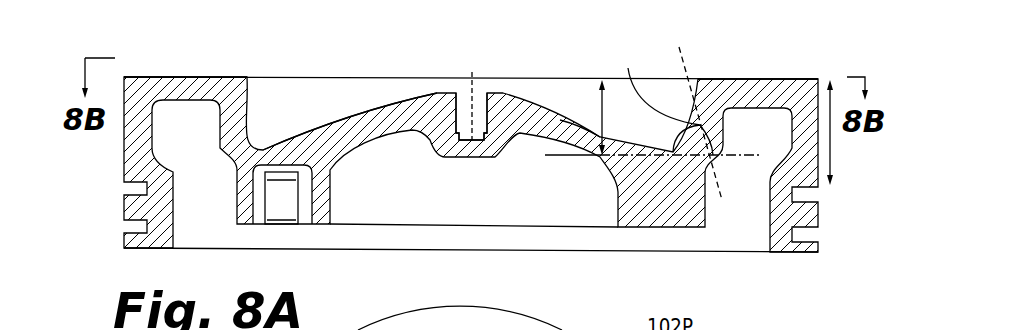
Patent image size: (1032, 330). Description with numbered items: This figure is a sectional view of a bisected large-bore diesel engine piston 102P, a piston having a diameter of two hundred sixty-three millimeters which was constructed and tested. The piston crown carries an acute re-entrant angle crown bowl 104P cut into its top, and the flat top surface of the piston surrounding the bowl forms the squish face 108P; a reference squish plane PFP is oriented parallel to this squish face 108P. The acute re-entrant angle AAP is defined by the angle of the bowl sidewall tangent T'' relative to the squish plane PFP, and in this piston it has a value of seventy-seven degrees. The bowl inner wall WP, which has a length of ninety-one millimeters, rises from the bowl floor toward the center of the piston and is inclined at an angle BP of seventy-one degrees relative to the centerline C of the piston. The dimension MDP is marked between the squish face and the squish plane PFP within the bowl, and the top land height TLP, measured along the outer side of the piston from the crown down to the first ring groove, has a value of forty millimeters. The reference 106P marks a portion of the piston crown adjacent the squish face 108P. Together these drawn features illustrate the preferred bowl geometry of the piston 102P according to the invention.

The large-bore diesel engine piston 102P is at (818, 75).
The acute re-entrant angle crown bowl 104P is at (310, 96).
The top land / rim 106P is at (216, 66).
The squish face 108P is at (770, 78).
The centerline C is at (472, 72).
The bowl inner wall WP is at (577, 128).
The acute re-entrant angle AAP is at (659, 99).
The maximum depth of piston bowl MDP is at (636, 112).
The bowl inner wall angle BP is at (496, 118).
The squish plane PFP is at (565, 157).
The tangent line T'' is at (719, 123).
The top land height TLP is at (832, 140).